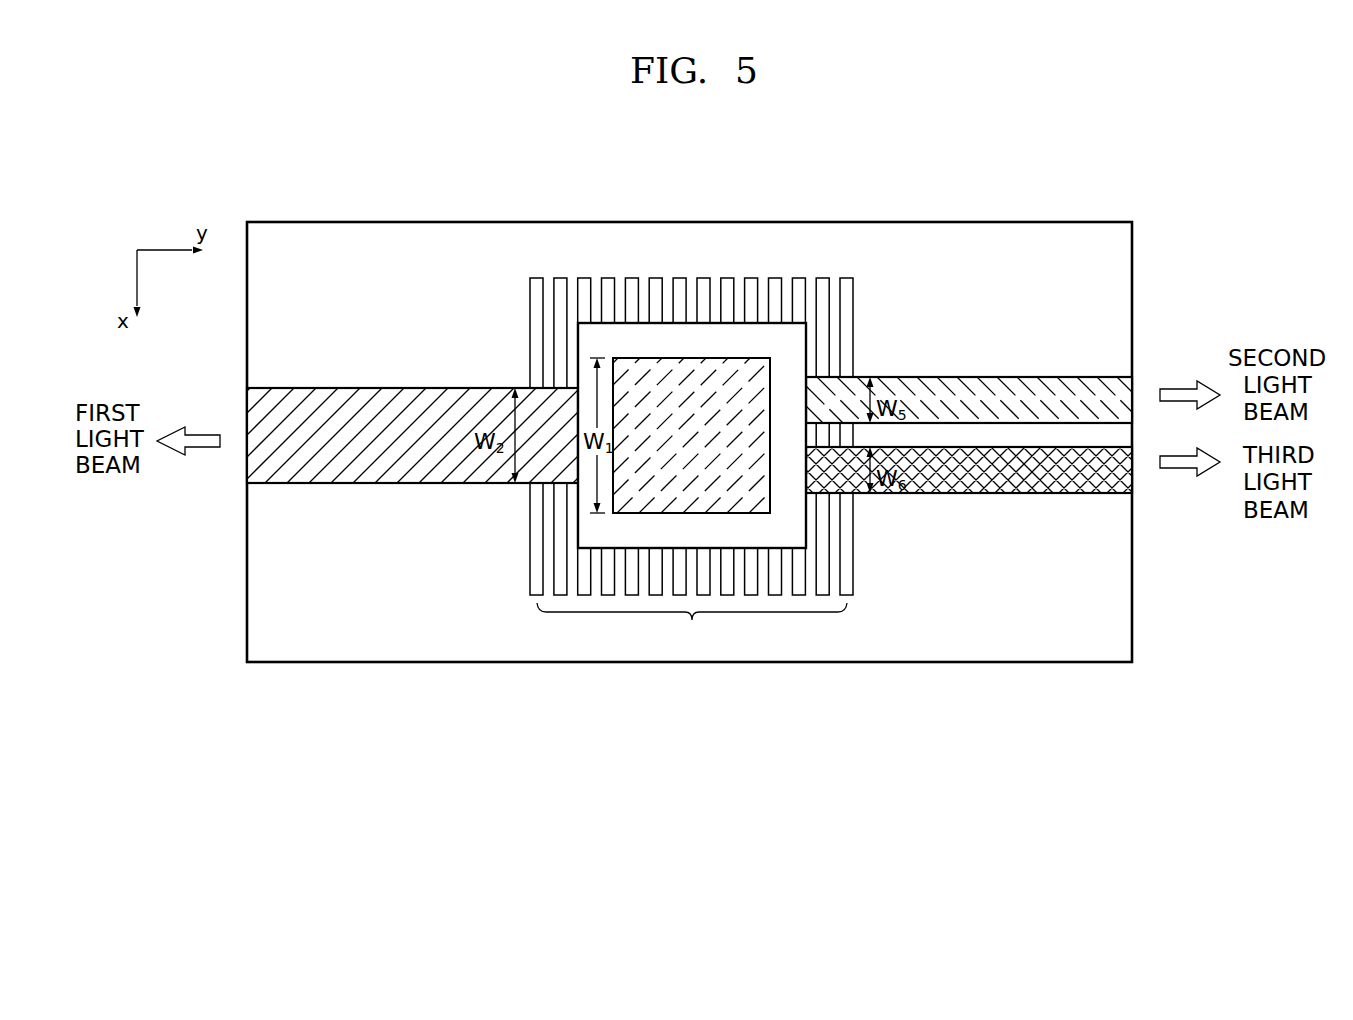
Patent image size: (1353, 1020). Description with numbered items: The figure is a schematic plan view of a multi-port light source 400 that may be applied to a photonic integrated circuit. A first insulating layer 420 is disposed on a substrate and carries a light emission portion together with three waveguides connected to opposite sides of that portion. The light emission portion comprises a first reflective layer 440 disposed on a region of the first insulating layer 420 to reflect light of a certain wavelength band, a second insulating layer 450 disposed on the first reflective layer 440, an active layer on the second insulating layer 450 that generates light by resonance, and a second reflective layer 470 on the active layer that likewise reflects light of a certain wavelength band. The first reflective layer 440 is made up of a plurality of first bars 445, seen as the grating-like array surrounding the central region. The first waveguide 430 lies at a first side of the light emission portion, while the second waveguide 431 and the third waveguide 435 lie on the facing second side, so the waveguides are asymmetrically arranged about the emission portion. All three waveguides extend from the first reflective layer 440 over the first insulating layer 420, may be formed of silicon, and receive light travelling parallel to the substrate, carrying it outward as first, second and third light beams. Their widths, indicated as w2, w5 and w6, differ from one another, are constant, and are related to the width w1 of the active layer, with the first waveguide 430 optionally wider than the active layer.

The multi-port light source 400 is at (1068, 188).
The first insulating layer 420 is at (1132, 290).
The first waveguide 430 is at (290, 483).
The second waveguide 431 is at (1094, 377).
The third waveguide 435 is at (1094, 493).
The first reflective layer 440 is at (692, 626).
The first bars 445 is at (584, 277).
The second insulating layer 450 is at (758, 323).
The second reflective layer 470 is at (693, 358).